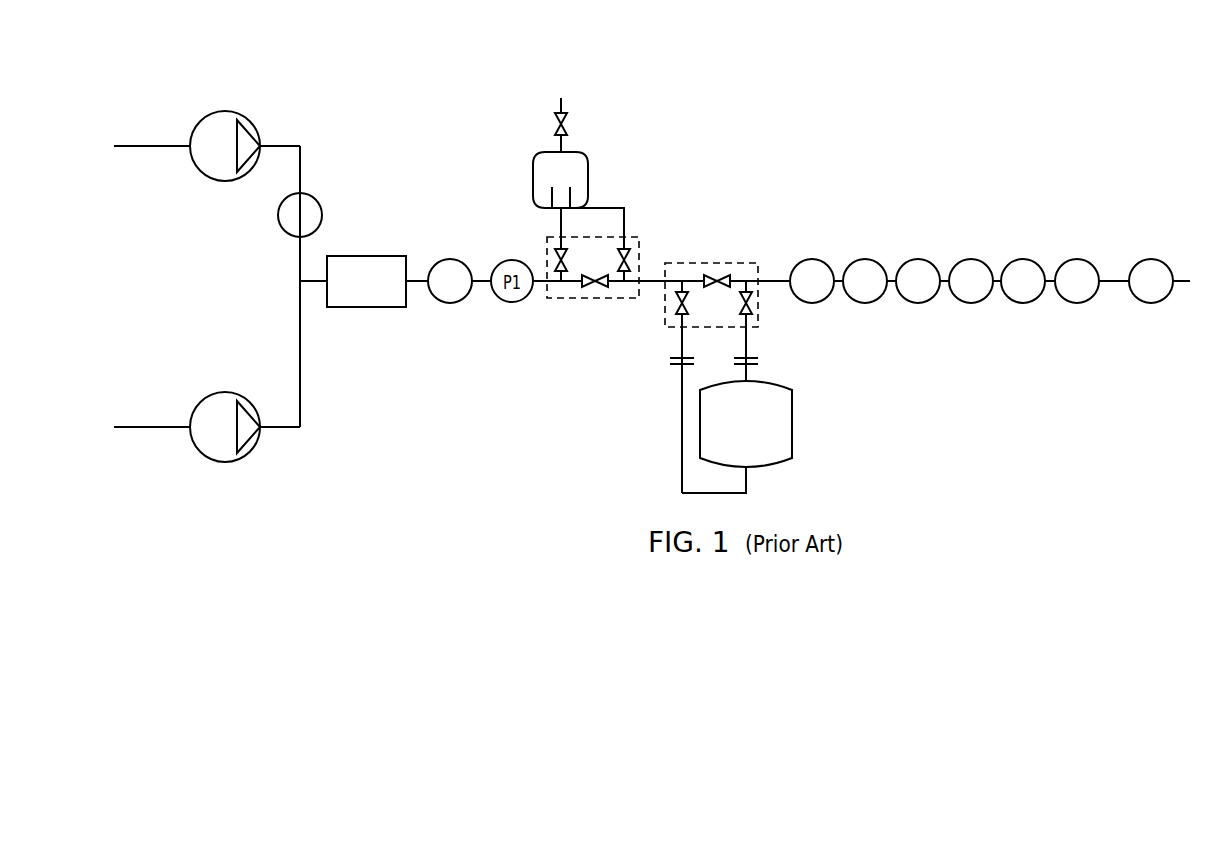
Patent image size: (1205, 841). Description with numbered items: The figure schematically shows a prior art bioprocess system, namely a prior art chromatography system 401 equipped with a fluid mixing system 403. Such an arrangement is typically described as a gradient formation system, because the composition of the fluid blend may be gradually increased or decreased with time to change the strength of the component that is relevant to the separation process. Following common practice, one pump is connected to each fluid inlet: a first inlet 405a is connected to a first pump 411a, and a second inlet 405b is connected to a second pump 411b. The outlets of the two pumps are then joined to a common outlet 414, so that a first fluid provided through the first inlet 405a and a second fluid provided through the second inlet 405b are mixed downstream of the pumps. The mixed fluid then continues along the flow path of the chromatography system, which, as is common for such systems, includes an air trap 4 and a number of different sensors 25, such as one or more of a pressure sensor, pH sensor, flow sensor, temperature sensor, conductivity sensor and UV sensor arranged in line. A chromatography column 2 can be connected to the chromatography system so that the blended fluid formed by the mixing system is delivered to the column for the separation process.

The prior art chromatography system 401 is at (907, 63).
The fluid mixing system 403 is at (452, 96).
The first inlet 405a is at (129, 128).
The second inlet 405b is at (129, 440).
The first pump 411a is at (228, 111).
The second pump 411b is at (228, 462).
The common outlet 414 is at (452, 259).
The sensors 25 is at (1077, 259).
The air trap 4 is at (554, 181).
The chromatography column 2 is at (738, 431).